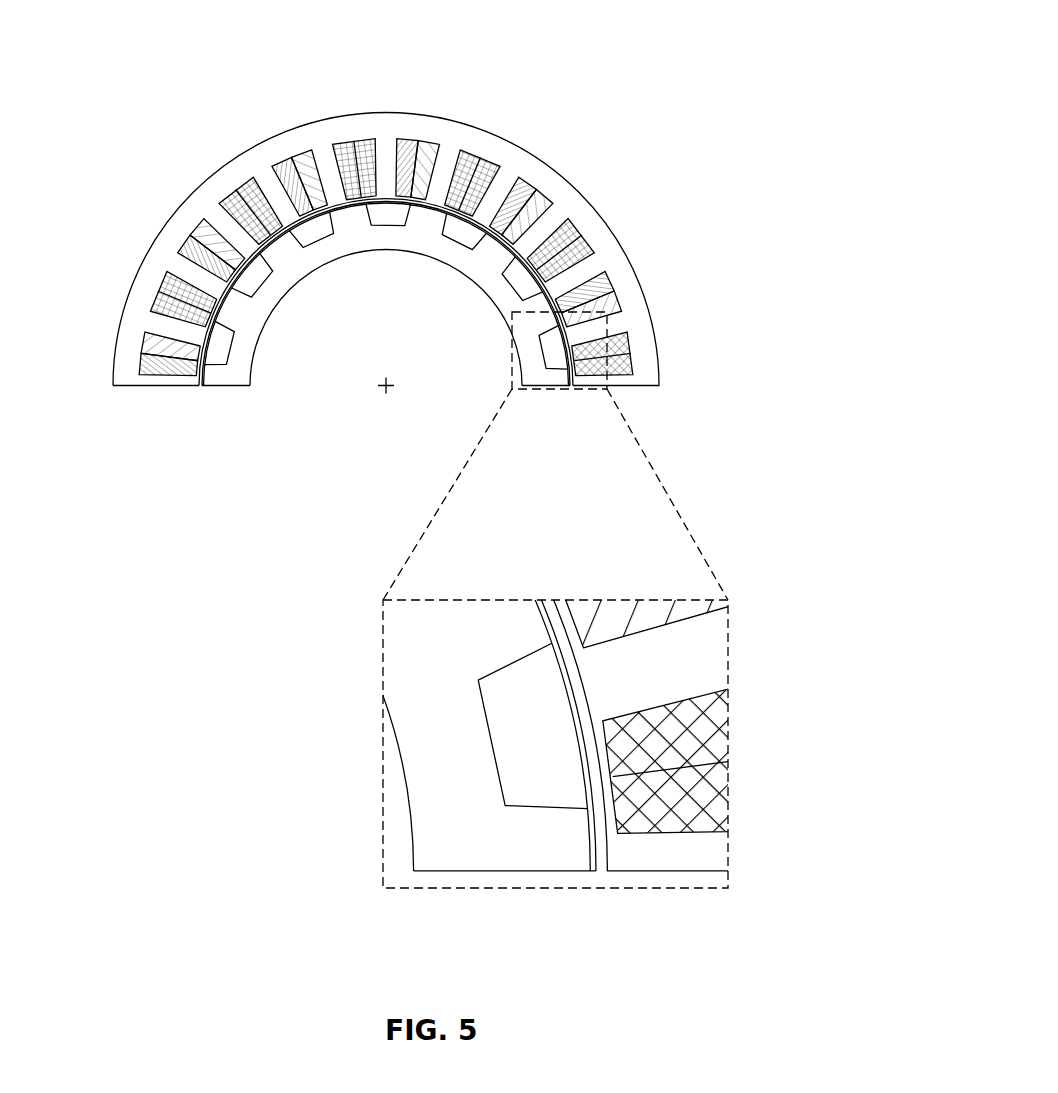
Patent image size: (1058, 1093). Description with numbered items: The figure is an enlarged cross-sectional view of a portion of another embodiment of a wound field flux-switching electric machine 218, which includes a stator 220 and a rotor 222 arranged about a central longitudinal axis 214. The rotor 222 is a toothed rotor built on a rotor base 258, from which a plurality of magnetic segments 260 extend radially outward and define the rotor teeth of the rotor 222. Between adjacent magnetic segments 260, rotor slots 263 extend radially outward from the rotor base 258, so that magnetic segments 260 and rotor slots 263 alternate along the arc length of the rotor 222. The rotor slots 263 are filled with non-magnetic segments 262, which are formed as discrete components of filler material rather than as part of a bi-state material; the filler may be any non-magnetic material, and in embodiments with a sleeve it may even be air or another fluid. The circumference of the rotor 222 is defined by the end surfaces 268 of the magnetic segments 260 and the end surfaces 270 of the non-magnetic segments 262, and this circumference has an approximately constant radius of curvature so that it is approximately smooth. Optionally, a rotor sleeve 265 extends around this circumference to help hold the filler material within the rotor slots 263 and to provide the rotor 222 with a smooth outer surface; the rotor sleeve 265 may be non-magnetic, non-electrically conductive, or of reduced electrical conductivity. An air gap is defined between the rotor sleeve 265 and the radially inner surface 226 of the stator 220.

The central longitudinal axis 214 is at (387, 389).
The wound field flux-switching electric machine 218 is at (608, 56).
The stator 220 is at (566, 205).
The rotor 222 is at (219, 397).
The radially inner surface 226 is at (240, 338).
The rotor base 258 is at (360, 242).
The magnetic segments 260 is at (423, 225).
The non-magnetic segments 262 is at (484, 217).
The rotor slots 263 is at (460, 243).
The rotor sleeve 265 is at (223, 290).
The end surfaces 268 is at (270, 242).
The end surfaces 270 is at (323, 235).